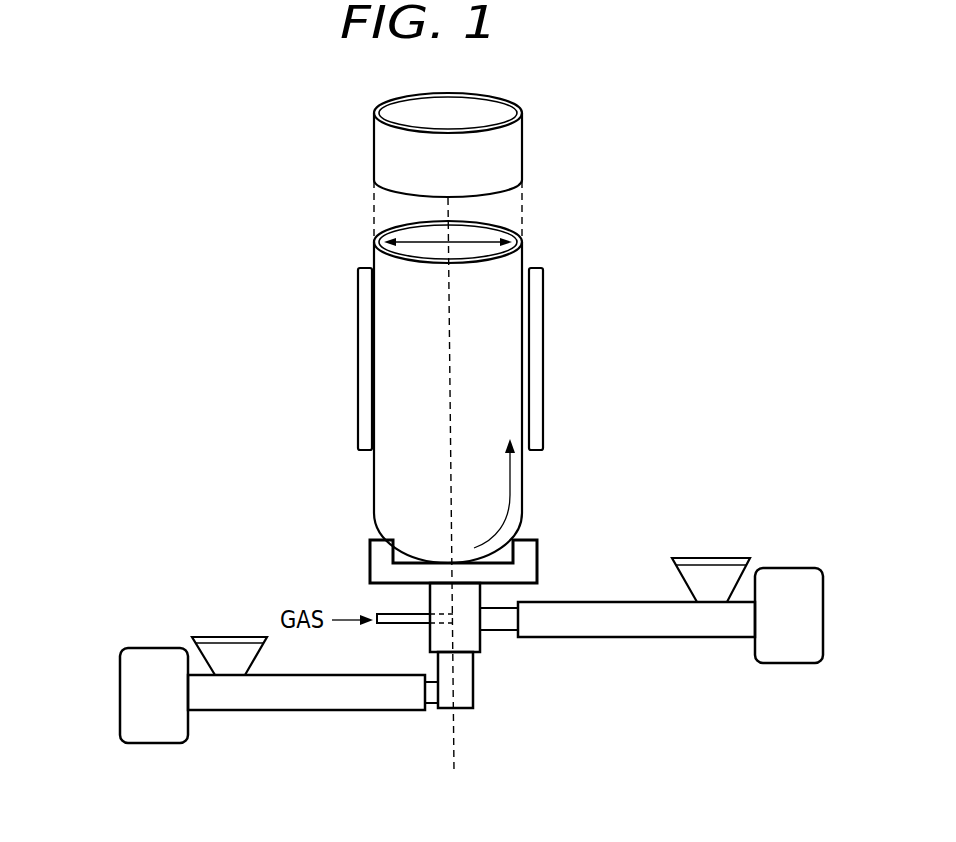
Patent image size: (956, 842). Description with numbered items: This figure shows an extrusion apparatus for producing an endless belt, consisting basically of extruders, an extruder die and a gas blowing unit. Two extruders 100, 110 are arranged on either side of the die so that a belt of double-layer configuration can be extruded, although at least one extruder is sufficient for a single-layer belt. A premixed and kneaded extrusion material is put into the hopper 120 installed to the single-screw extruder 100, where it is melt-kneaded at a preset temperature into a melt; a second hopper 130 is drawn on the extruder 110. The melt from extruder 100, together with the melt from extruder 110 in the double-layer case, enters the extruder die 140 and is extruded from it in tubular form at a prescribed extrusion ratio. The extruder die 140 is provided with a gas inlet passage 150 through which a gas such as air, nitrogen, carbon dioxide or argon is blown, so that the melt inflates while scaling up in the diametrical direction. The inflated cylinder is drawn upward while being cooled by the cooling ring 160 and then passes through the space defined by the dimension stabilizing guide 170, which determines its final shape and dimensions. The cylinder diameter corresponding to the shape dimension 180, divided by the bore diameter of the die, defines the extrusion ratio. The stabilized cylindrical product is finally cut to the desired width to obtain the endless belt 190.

The extruder 100 is at (312, 710).
The extruder 110 is at (628, 637).
The hopper 120 is at (230, 650).
The second hopper 130 is at (710, 572).
The extruder die 140 is at (483, 642).
The gas inlet passage 150 is at (386, 612).
The cooling ring 160 is at (378, 545).
The dimension stabilizing guide 170 is at (358, 391).
The shape dimension 180 is at (490, 239).
The endless belt 190 is at (378, 142).